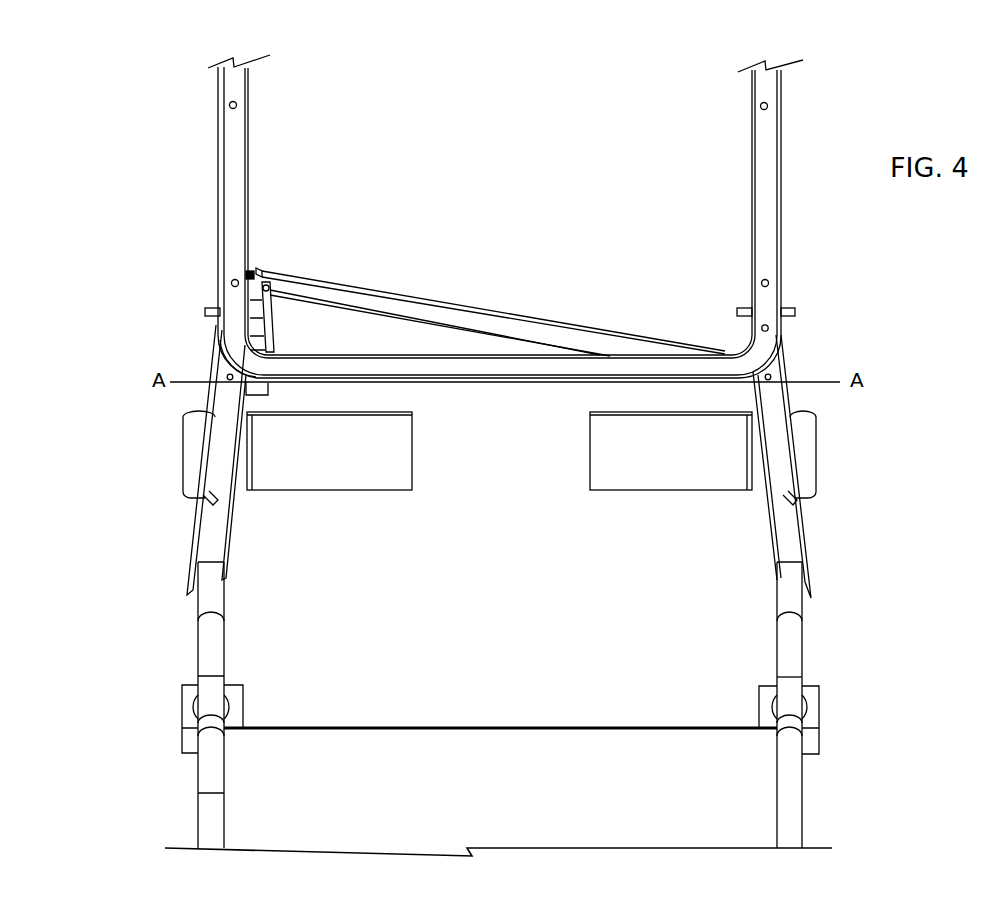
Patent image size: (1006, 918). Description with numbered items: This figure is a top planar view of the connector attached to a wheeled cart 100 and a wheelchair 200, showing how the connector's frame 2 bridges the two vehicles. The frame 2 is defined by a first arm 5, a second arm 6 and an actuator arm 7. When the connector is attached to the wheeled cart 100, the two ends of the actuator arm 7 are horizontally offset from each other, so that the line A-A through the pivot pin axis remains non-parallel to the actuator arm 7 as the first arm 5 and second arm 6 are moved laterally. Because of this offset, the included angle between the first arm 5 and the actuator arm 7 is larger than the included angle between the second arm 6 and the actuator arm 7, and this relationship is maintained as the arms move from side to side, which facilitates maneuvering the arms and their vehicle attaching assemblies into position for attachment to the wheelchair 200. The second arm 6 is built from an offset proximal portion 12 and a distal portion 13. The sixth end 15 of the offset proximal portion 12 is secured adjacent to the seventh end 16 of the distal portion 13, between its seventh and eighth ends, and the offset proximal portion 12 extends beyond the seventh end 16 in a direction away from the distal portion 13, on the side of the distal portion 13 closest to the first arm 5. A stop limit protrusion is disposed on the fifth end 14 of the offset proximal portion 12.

The wheeled cart 100 is at (218, 184).
The frame 2 is at (405, 295).
The actuator arm 7 is at (567, 341).
The offset proximal portion 12 is at (273, 326).
The fifth end 14 is at (252, 272).
The sixth end 15 is at (258, 389).
The seventh end 16 is at (231, 364).
The second arm 6 is at (222, 453).
The distal portion 13 is at (215, 480).
The first arm 5 is at (783, 530).
The wheelchair 200 is at (812, 703).